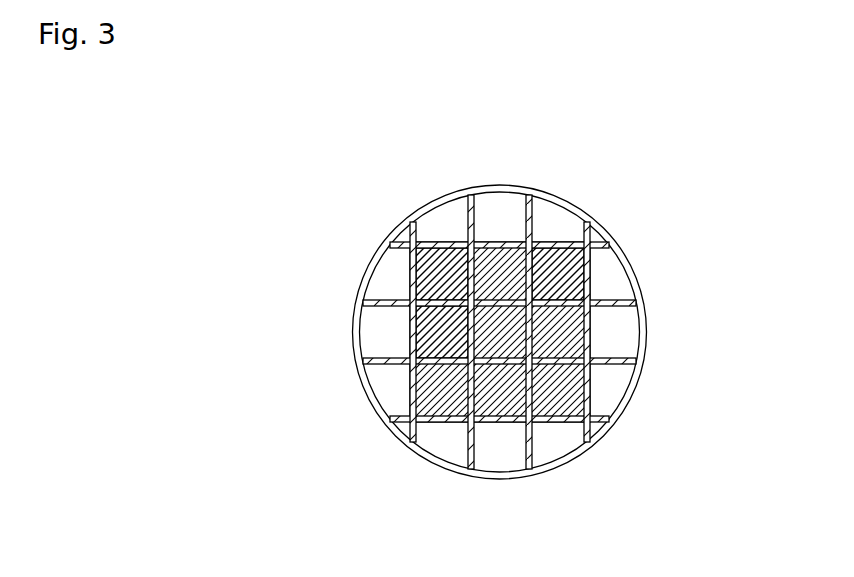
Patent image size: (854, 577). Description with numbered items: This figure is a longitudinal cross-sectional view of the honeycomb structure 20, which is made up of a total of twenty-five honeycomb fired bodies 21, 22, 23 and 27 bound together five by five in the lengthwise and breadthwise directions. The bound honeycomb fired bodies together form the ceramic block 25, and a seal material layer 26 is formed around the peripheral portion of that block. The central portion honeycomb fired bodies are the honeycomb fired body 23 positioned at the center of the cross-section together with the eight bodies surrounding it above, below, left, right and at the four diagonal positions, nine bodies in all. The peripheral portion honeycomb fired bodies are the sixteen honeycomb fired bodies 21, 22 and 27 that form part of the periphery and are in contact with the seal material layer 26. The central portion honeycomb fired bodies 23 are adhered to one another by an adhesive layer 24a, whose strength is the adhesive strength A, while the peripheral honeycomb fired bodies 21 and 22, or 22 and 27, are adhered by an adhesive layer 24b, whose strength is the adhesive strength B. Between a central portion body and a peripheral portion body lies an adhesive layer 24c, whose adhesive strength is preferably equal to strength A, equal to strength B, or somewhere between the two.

The honeycomb structure 20 is at (403, 188).
The honeycomb fired body 21 is at (597, 427).
The honeycomb fired body 22 is at (397, 380).
The honeycomb fired body 23 is at (557, 402).
The adhesive layer 24a is at (565, 300).
The adhesive layer 24b is at (395, 303).
The adhesive layer 24c is at (410, 267).
The ceramic block 25 is at (648, 366).
The seal material layer 26 is at (640, 322).
The honeycomb fired body 27 is at (500, 448).